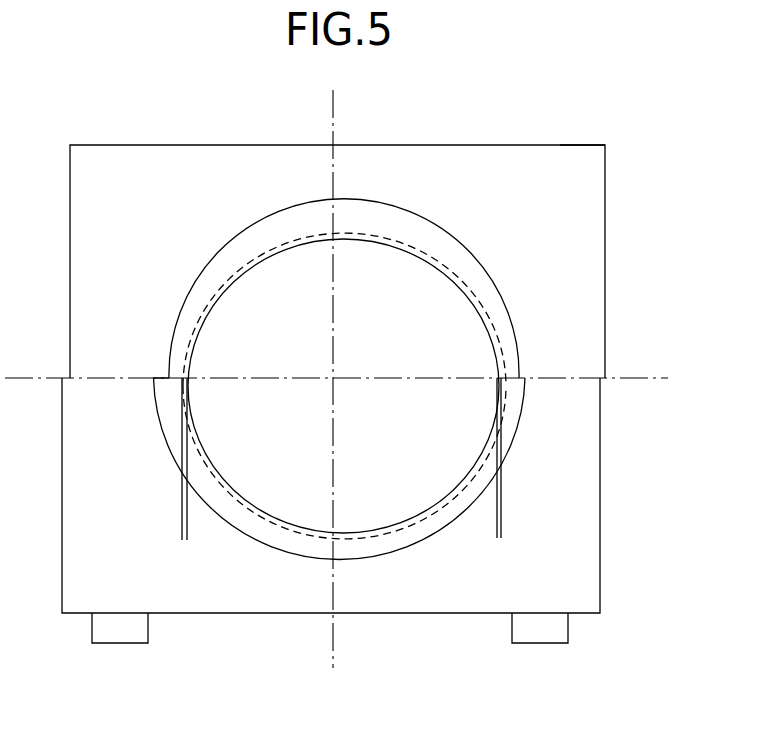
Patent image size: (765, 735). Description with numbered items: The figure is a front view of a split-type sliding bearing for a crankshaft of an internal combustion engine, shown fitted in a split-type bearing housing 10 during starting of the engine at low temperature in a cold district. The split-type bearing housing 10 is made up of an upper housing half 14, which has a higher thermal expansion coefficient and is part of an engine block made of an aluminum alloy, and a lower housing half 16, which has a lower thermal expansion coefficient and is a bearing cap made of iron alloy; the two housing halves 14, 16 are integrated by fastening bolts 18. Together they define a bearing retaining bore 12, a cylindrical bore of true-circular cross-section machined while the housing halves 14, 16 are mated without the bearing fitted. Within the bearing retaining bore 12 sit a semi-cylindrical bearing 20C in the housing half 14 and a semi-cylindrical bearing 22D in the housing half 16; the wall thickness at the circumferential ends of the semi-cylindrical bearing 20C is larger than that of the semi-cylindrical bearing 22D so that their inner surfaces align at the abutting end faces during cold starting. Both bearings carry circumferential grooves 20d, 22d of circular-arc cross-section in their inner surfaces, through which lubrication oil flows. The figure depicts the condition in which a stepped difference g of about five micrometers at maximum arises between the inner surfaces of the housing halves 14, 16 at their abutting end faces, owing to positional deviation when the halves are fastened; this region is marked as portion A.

The split-type bearing housing 10 is at (482, 118).
The bearing retaining bore 12 is at (440, 243).
The housing half 14 is at (592, 262).
The housing half 16 is at (585, 494).
The fastening bolts 18 is at (122, 634).
The semi-cylindrical bearing 20C is at (243, 249).
The circumferential grooves 20d is at (462, 298).
The semi-cylindrical bearing 22D is at (238, 520).
The circumferential grooves 22d is at (480, 456).
The stepped difference g is at (207, 522).
The portion A is at (152, 359).